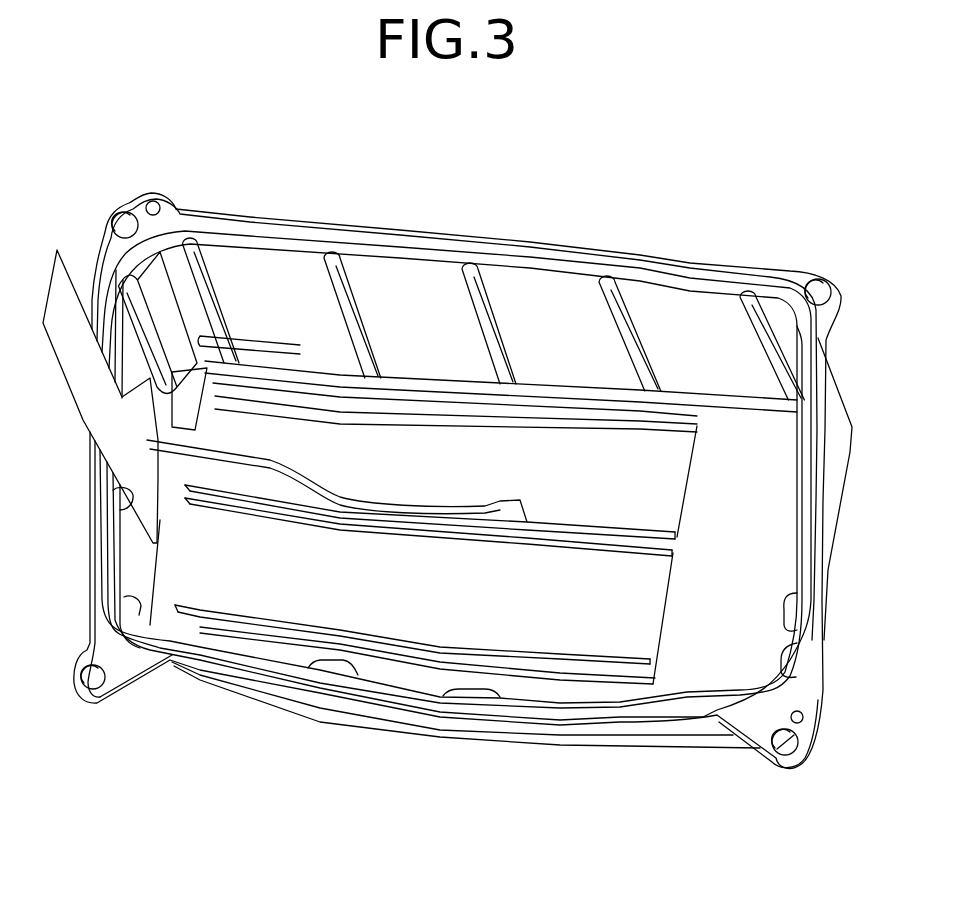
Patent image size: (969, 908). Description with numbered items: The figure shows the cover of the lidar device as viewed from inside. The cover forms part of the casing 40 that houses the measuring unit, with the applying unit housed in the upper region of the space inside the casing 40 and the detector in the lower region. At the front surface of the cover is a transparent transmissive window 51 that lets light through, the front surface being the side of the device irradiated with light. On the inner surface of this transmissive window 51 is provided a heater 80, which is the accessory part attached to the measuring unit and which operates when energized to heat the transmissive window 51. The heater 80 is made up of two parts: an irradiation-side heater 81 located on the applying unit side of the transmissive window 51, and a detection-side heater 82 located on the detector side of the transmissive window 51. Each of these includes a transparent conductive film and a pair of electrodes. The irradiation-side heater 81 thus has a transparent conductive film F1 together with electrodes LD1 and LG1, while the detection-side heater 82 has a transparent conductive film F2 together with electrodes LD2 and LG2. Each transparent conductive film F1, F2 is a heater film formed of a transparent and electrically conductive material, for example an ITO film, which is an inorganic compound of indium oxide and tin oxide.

The casing 40 is at (584, 157).
The transmissive window 51 is at (745, 647).
The heater 80 is at (375, 841).
The irradiation-side heater 81 is at (360, 453).
The detection-side heater 82 is at (272, 572).
The transparent conductive film F1 is at (667, 459).
The transparent conductive film F2 is at (650, 587).
The electrode LD1 is at (437, 406).
The electrode LD2 is at (447, 644).
The electrode LG1 is at (584, 527).
The electrode LG2 is at (497, 547).